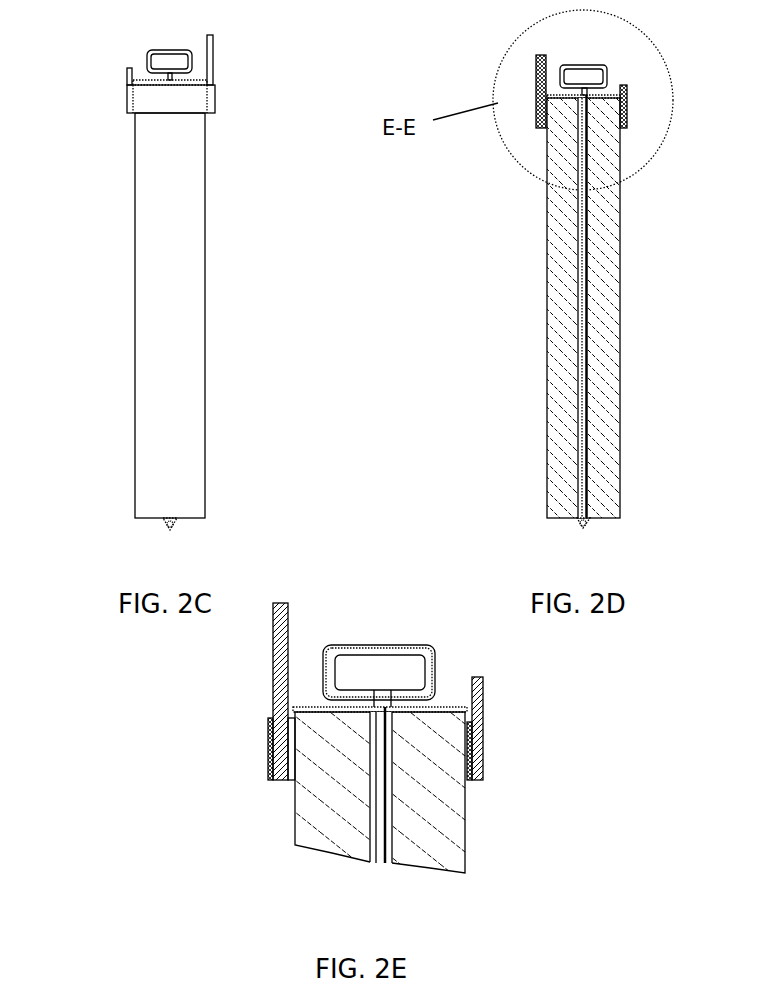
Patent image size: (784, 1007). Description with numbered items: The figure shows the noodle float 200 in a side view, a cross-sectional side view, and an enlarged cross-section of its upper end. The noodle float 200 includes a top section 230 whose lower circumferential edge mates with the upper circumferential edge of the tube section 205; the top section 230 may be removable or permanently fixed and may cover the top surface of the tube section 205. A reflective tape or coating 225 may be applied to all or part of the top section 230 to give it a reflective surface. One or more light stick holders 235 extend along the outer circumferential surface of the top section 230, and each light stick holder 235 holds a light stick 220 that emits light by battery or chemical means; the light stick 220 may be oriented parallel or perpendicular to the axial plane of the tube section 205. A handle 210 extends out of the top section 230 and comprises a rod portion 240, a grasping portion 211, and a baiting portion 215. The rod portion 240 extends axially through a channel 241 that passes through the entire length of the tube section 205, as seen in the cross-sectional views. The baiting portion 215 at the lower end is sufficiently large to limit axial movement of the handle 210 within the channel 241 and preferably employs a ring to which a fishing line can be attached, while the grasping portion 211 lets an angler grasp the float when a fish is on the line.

In FIG. 2C, the noodle float 200 is at (231, 287).
In FIG. 2D, the noodle float 200 is at (639, 395).
In FIG. 2E, the noodle float 200 is at (209, 816).
In FIG. 2C, the tube section 205 is at (172, 300).
In FIG. 2D, the tube section 205 is at (545, 268).
In FIG. 2D, the handle 210 is at (583, 65).
In FIG. 2E, the grasping portion 211 is at (400, 645).
In FIG. 2C, the baiting portion 215 is at (170, 530).
In FIG. 2D, the baiting portion 215 is at (583, 530).
In FIG. 2E, the light stick 220 is at (285, 630).
In FIG. 2C, the reflective tape or coating 225 is at (163, 92).
In FIG. 2D, the reflective tape or coating 225 is at (540, 125).
In FIG. 2E, the reflective tape or coating 225 is at (483, 745).
In FIG. 2C, the top section 230 is at (137, 83).
In FIG. 2D, the top section 230 is at (603, 97).
In FIG. 2E, the top section 230 is at (443, 707).
In FIG. 2C, the light stick holder 235 is at (215, 98).
In FIG. 2E, the light stick holder 235 is at (268, 743).
In FIG. 2D, the rod portion 240 is at (580, 365).
In FIG. 2E, the rod portion 240 is at (380, 810).
In FIG. 2D, the channel 241 is at (583, 235).
In FIG. 2E, the channel 241 is at (385, 812).